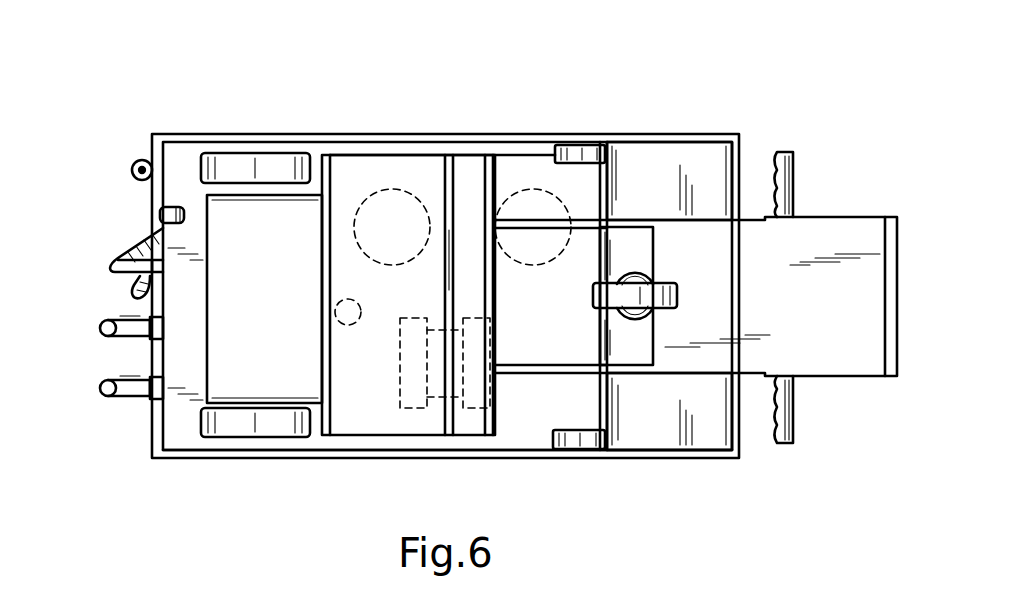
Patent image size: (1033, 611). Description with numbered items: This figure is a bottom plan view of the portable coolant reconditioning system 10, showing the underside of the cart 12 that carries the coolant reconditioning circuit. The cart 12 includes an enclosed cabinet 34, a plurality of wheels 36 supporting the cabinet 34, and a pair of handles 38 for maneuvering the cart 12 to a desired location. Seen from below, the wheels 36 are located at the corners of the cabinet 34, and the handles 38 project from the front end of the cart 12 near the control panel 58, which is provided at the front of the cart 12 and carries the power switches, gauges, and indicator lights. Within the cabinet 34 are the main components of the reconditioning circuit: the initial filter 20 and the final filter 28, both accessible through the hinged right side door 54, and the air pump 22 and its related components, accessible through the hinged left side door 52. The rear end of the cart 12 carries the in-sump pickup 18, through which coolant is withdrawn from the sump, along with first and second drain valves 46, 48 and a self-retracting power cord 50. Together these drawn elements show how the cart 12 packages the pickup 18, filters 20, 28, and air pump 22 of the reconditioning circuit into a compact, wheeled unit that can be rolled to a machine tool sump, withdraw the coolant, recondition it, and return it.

The portable coolant reconditioning system 10 is at (161, 82).
The cart 12 is at (176, 460).
The in-sump pickup 18 is at (131, 157).
The initial filter 20 is at (390, 188).
The air pump 22 is at (407, 410).
The final filter 28 is at (530, 188).
The enclosed cabinet 34 is at (236, 460).
The wheels 36 is at (243, 158).
The handles 38 is at (793, 176).
The first drain valve 46 is at (118, 382).
The second drain valve 48 is at (118, 322).
The self-retracting power cord 50 is at (158, 214).
The left side door 52 is at (355, 458).
The right side door 54 is at (403, 135).
The control panel 58 is at (840, 216).